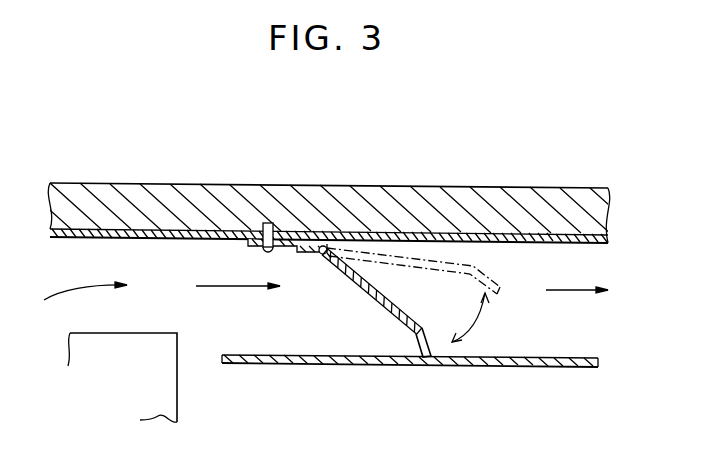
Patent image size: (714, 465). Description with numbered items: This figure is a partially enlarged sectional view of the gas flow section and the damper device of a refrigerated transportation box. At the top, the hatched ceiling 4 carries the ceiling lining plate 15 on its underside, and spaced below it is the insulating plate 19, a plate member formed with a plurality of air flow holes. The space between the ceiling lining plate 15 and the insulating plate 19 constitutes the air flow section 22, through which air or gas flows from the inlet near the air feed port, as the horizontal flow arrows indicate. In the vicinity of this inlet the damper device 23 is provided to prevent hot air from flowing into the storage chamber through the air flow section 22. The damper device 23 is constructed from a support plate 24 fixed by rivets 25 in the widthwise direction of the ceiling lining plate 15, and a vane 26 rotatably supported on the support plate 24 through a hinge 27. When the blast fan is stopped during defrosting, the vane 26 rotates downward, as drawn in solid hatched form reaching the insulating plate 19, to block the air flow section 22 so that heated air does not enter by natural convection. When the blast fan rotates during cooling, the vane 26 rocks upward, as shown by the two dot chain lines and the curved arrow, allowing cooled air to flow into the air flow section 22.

The ceiling 4 is at (522, 190).
The ceiling lining plate 15 is at (160, 239).
The support plate 24 is at (291, 247).
The rivet 25 is at (265, 250).
The hinge 27 is at (323, 247).
The vane 26 is at (384, 307).
The damper device 23 is at (332, 273).
The insulating plate 19 is at (493, 368).
The air flow section 22 is at (561, 336).